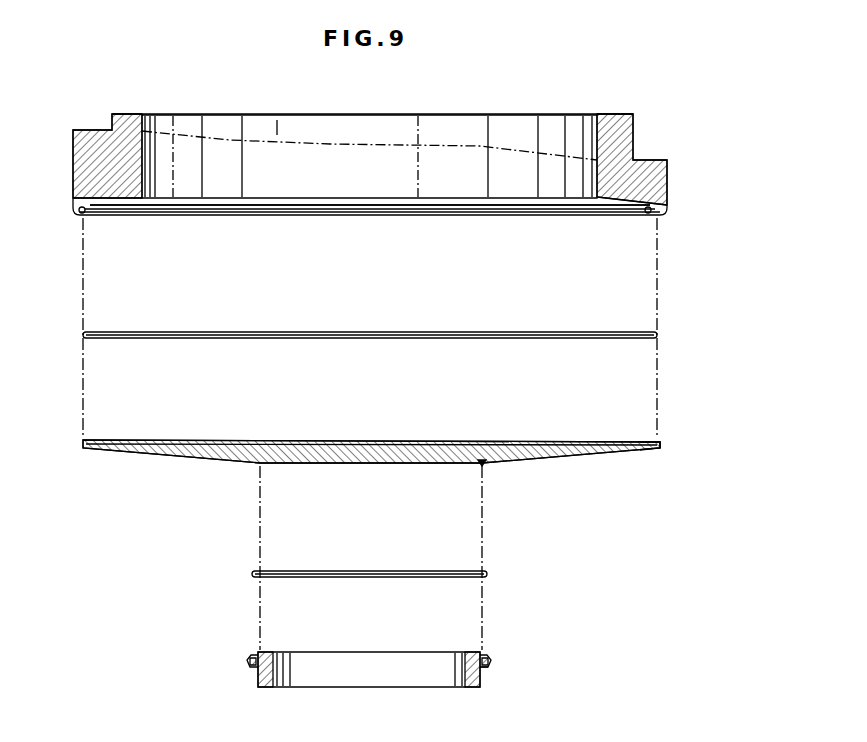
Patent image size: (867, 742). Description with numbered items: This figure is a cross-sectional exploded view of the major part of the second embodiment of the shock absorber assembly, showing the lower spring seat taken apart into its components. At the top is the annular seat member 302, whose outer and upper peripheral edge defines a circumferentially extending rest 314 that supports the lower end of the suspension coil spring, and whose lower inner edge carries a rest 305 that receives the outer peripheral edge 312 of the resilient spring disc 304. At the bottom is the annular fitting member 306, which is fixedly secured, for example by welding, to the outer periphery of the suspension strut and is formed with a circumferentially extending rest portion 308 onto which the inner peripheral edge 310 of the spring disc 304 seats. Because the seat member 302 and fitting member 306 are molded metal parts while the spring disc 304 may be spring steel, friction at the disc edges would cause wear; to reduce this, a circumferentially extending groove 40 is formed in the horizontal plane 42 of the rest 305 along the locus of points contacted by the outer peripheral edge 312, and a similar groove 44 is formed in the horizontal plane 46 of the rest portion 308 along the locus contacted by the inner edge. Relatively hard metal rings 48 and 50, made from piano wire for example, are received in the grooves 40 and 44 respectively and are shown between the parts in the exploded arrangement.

The circumferentially extending groove 40 is at (76, 214).
The horizontal plane 42 is at (667, 163).
The circumferentially extending groove 44 is at (256, 668).
The horizontal plane 46 is at (492, 668).
The hard metal ring 48 is at (536, 330).
The hard metal ring 50 is at (482, 568).
The annular seat member 302 is at (577, 110).
The resilient spring disc 304 is at (494, 436).
The rest 305 is at (645, 207).
The annular fitting member 306 is at (447, 648).
The rest portion 308 is at (254, 656).
The inner peripheral edge 310 is at (480, 467).
The outer peripheral edge 312 is at (662, 443).
The rest 314 is at (114, 130).